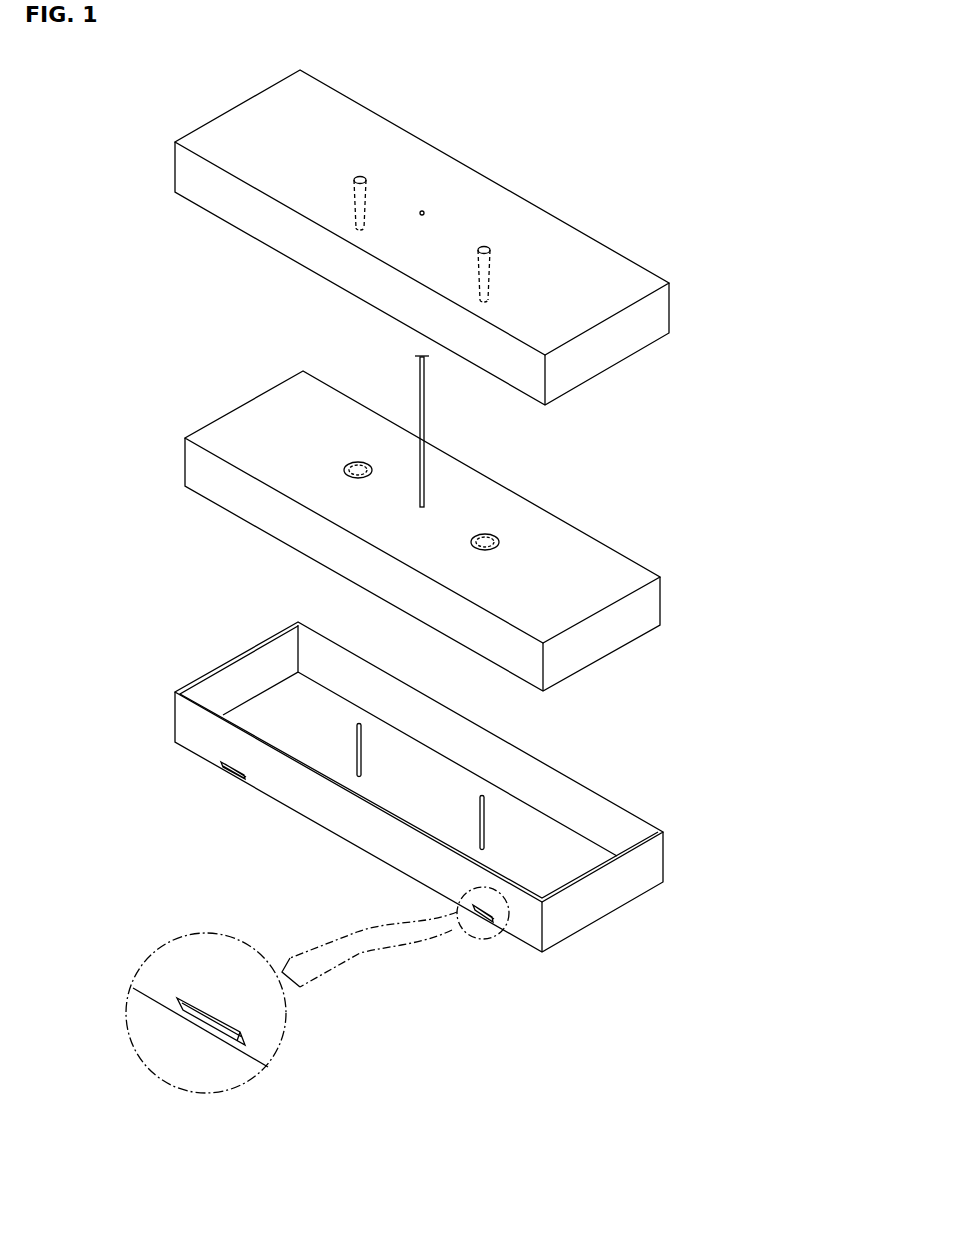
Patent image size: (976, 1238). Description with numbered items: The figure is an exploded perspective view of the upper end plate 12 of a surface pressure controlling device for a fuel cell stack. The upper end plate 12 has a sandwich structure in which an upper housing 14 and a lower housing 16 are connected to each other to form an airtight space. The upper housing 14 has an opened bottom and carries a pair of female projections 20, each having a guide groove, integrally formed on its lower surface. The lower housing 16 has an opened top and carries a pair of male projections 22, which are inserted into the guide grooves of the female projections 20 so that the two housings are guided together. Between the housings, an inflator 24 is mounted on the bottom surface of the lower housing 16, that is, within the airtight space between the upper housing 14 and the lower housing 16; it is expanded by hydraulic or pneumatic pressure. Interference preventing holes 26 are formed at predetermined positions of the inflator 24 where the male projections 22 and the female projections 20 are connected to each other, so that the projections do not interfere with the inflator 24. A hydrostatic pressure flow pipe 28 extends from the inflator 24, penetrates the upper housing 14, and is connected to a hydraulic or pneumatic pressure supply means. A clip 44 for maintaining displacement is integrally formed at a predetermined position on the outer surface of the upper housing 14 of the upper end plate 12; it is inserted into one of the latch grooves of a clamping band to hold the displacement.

The upper end plate 12 is at (438, 234).
The upper housing 14 is at (592, 252).
The female projections 20 is at (357, 208).
The hydrostatic pressure flow pipe 28 is at (424, 423).
The inflator 24 is at (477, 531).
The interference preventing holes 26 is at (485, 542).
The lower housing 16 is at (422, 857).
The male projections 22 is at (482, 820).
The clip for maintaining displacement 44 is at (180, 996).